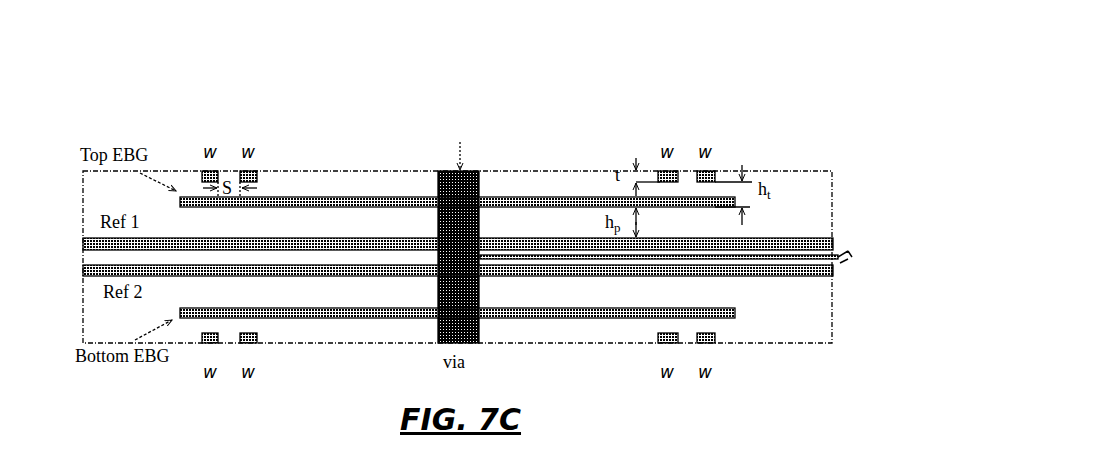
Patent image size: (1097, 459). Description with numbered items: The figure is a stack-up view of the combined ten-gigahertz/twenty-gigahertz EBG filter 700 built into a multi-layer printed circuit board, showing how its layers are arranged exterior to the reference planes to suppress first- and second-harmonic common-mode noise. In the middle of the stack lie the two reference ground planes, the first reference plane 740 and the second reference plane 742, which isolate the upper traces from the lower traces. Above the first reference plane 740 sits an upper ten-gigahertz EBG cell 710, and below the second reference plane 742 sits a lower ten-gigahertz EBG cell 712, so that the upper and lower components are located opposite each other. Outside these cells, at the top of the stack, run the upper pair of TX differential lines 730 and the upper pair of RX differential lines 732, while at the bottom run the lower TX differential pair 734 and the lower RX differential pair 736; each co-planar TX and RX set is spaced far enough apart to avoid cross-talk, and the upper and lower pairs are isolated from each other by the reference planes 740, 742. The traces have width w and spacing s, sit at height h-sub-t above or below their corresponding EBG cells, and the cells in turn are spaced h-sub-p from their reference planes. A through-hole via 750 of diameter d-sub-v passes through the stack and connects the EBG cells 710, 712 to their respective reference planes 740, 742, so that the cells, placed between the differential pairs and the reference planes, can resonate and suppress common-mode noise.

The 10-GHz EBG filter 700 is at (124, 64).
The upper 10-GHz EBG cell 710 is at (338, 197).
The lower 10-GHz EBG cell 712 is at (315, 313).
The upper pair of differential lines (TX) 730 is at (243, 136).
The upper pair of differential lines (RX) 732 is at (680, 171).
The lower pair of differential lines (TX) 734 is at (240, 344).
The lower pair of differential lines (RX) 736 is at (678, 337).
The reference ground plane Ref 1 740 is at (768, 241).
The reference ground plane Ref 2 742 is at (785, 265).
The through-hole via 750 is at (481, 200).